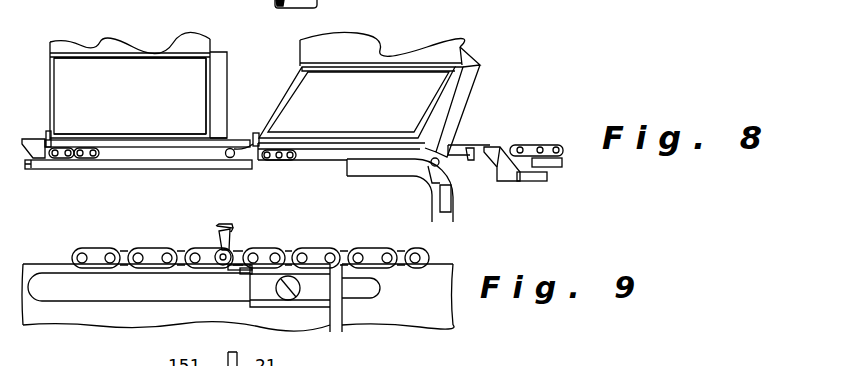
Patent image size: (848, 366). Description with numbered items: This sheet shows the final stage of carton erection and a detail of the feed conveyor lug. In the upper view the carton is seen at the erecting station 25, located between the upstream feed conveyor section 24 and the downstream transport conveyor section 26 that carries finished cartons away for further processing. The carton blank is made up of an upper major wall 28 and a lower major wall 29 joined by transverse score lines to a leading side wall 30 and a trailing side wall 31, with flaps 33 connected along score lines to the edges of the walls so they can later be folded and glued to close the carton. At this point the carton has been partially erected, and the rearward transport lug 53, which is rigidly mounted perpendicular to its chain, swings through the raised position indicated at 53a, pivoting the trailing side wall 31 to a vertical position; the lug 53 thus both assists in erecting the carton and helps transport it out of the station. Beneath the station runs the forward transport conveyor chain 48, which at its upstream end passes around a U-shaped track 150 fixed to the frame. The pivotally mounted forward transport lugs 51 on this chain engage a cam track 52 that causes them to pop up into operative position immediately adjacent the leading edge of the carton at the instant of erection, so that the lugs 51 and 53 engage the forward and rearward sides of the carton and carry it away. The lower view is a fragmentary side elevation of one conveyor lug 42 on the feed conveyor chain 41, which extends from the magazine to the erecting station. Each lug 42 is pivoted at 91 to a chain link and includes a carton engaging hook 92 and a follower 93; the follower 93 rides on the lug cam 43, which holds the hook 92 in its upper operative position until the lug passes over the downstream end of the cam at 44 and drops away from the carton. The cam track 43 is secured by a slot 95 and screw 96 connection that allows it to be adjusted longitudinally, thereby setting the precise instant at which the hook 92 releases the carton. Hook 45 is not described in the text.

In FIG. 8, the feed conveyor section 24 is at (547, 142).
In FIG. 9, the feed conveyor section 24 is at (452, 250).
In FIG. 8, the erecting station 25 is at (507, 30).
In FIG. 8, the transport conveyor section 26 is at (43, 188).
In FIG. 8, the upper major wall 28 is at (143, 60).
In FIG. 8, the lower major wall 29 is at (137, 133).
In FIG. 8, the leading side wall 30 is at (57, 93).
In FIG. 8, the trailing side wall 31 is at (203, 90).
In FIG. 8, the flaps 33 is at (140, 47).
In FIG. 9, the feed conveyor chain 41 is at (357, 250).
In FIG. 9, the conveyor lug 42 is at (239, 235).
In FIG. 9, the lug cam 43 is at (388, 297).
In FIG. 8, the downstream end of the cam 44 is at (553, 170).
In FIG. 9, the downstream end of the cam 44 is at (260, 298).
In FIG. 8, the hook 45 is at (503, 183).
In FIG. 8, the forward transport conveyor chain 48 is at (278, 160).
In FIG. 8, the forward transport lug 51 is at (247, 167).
In FIG. 8, the cam track 52 is at (222, 170).
In FIG. 8, the rearward transport lug 53 is at (220, 67).
In FIG. 8, the upwardly swung lug position 53a is at (472, 71).
In FIG. 9, the pivot 91 is at (230, 277).
In FIG. 9, the carton engaging hook 92 is at (220, 230).
In FIG. 9, the follower 93 is at (245, 275).
In FIG. 9, the slot 95 is at (322, 300).
In FIG. 9, the screw 96 is at (293, 300).
In FIG. 8, the U-shaped track 150 is at (382, 168).